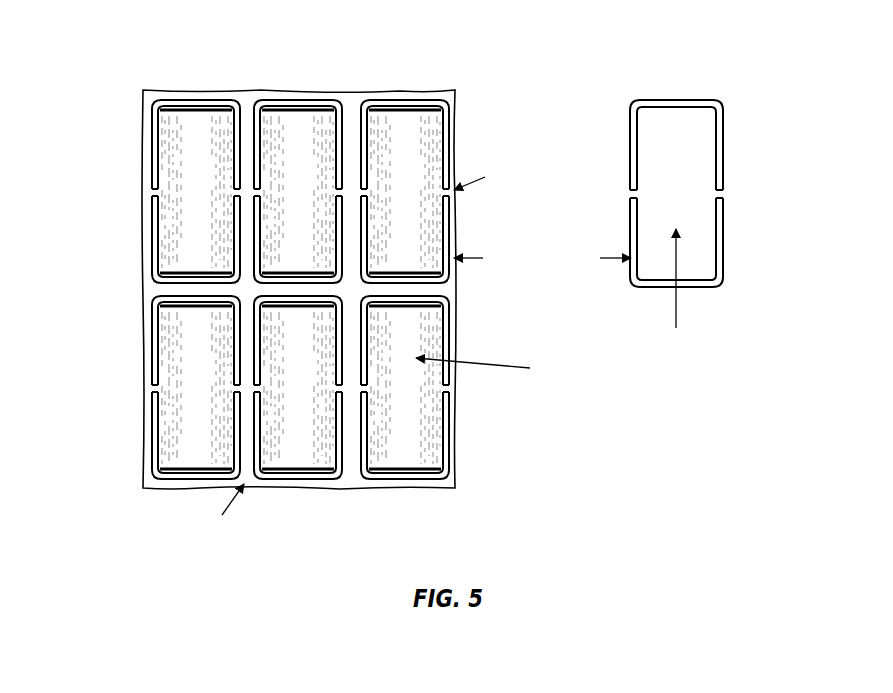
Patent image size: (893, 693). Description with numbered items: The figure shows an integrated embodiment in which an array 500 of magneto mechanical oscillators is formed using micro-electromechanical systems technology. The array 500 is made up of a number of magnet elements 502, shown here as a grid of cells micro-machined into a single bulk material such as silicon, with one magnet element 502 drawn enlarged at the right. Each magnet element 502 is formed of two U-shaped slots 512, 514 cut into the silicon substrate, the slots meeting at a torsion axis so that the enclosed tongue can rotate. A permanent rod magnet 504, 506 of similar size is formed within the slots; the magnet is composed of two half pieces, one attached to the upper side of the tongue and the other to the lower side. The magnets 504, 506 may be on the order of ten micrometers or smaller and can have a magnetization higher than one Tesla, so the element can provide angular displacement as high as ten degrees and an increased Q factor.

The array 500 is at (117, 49).
The magnet element 502 is at (195, 118).
The permanent rod magnet 504 is at (656, 100).
The permanent rod magnet 506 is at (723, 248).
The U-shaped slot 512 is at (153, 118).
The U-shaped slot 514 is at (153, 235).